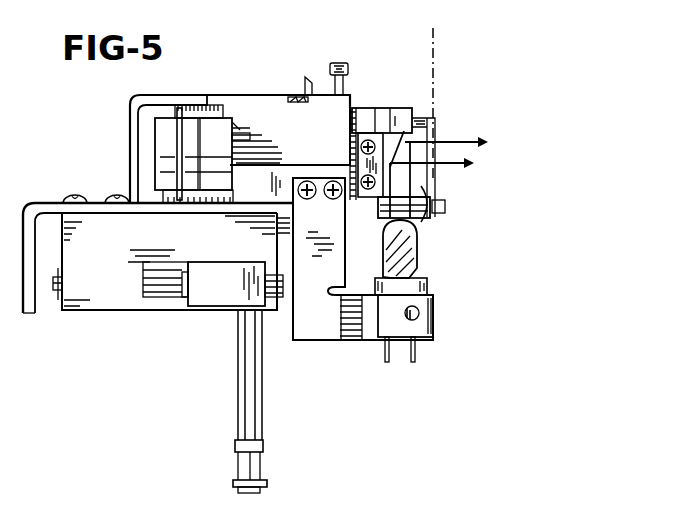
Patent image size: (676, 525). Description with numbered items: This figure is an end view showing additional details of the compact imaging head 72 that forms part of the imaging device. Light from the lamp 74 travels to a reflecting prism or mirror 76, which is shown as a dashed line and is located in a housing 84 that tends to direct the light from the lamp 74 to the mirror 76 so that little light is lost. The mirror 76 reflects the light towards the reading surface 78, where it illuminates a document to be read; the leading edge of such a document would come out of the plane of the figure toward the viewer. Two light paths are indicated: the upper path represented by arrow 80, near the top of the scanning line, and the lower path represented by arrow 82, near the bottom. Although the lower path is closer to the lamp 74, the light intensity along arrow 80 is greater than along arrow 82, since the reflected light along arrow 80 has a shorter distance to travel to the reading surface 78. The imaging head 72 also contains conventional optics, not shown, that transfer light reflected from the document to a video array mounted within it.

The imaging head 72 is at (276, 62).
The lamp 74 is at (422, 252).
The mirror 76 is at (395, 116).
The reading surface 78 is at (438, 44).
The arrow 80 is at (452, 138).
The arrow 82 is at (448, 166).
The housing 84 is at (426, 218).